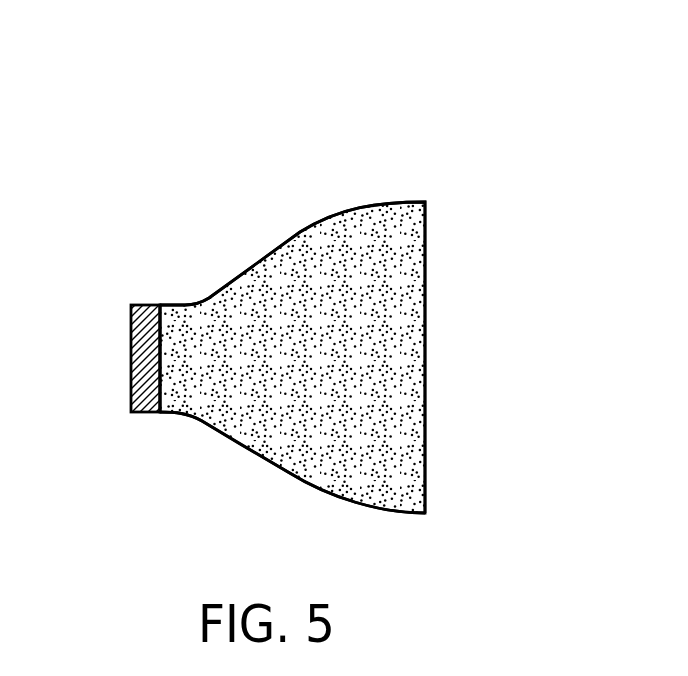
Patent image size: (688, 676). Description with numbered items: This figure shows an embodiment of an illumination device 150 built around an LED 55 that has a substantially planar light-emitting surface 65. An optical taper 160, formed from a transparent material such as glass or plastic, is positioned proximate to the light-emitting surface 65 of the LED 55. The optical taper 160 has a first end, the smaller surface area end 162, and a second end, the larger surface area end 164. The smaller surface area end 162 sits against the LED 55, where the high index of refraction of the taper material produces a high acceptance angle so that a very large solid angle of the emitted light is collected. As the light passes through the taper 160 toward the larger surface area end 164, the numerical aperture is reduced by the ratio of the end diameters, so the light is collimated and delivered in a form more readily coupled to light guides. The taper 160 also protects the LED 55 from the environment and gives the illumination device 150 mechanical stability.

The illumination device 150 is at (308, 106).
The LED 55 is at (126, 359).
The substantially planar light-emitting surface 65 is at (170, 318).
The larger surface area end 164 is at (429, 279).
The smaller surface area end 162 is at (171, 418).
The optical taper 160 is at (301, 472).